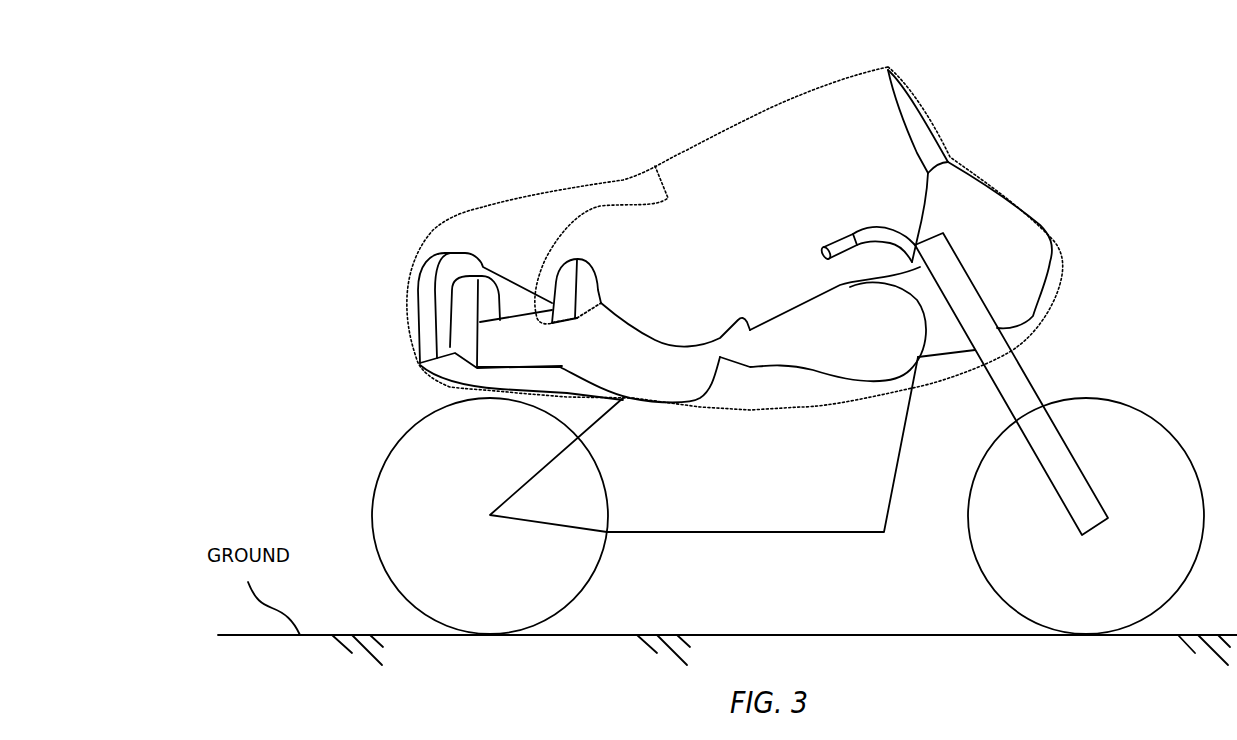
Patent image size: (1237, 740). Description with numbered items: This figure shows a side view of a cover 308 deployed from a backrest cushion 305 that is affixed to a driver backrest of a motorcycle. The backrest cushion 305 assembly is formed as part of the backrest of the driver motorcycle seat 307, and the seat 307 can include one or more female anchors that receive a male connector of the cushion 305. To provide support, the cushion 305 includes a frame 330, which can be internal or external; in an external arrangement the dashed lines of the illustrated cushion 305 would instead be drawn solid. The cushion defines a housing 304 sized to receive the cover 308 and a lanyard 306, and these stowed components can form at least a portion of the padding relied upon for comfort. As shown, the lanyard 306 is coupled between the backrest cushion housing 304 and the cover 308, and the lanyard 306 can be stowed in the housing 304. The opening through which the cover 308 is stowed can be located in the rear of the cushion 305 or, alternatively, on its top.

The housing 304 is at (577, 260).
The backrest cushion 305 is at (553, 272).
The lanyard 306 is at (673, 198).
The driver motorcycle seat 307 is at (655, 341).
The cover 308 is at (728, 127).
The frame 330 is at (483, 267).